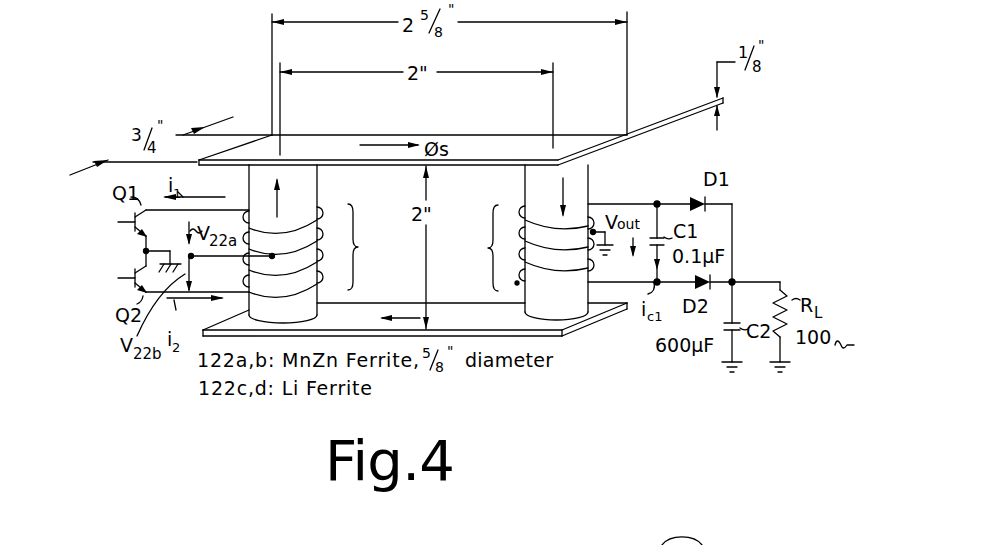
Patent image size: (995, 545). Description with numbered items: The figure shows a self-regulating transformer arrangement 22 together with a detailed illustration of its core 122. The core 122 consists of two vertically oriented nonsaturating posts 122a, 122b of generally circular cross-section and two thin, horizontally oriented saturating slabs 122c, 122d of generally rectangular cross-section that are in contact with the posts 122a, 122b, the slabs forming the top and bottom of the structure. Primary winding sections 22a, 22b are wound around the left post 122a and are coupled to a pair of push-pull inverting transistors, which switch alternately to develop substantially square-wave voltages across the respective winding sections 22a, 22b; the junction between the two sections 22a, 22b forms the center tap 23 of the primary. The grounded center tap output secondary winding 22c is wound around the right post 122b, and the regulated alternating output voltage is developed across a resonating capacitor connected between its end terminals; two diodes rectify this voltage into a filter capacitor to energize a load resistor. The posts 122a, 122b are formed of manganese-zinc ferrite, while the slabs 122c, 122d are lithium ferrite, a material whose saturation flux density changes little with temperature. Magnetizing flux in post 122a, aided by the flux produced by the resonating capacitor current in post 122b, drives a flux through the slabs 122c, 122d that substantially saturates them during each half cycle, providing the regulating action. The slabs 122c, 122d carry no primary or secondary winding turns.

The self-regulating transformer arrangement 22 is at (440, 121).
The primary winding section 22a is at (240, 209).
The primary winding section 22b is at (233, 294).
The secondary winding 22c is at (592, 205).
The primary center tap 23 is at (189, 254).
The core 122 is at (326, 244).
The nonsaturating post 122a is at (320, 187).
The nonsaturating post 122b is at (520, 303).
The saturating slab 122c is at (490, 165).
The saturating slab 122d is at (336, 311).